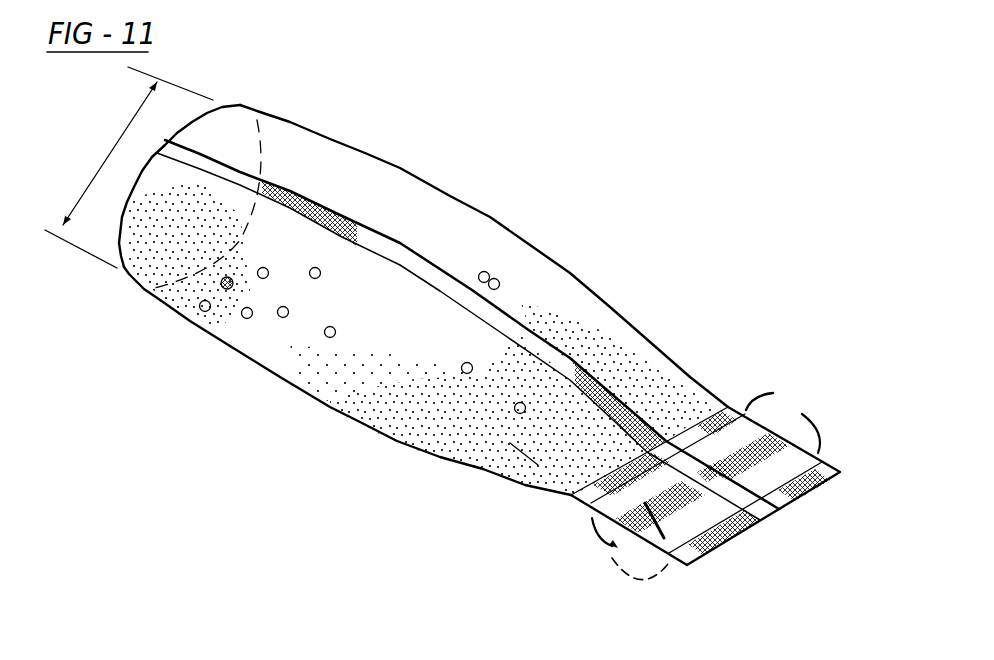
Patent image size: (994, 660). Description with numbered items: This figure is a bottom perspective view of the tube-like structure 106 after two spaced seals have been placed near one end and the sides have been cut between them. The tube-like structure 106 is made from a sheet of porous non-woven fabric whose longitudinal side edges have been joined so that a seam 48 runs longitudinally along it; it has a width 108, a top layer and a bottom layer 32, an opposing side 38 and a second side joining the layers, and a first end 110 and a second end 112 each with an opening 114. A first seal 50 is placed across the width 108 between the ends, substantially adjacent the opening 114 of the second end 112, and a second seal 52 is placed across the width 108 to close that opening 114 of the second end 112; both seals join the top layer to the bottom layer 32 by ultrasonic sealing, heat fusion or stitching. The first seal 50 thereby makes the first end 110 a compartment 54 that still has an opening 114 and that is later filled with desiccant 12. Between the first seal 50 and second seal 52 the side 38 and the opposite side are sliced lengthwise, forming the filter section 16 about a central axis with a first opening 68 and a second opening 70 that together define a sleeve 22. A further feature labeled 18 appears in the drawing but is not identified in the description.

The desiccant 12 is at (363, 372).
The filter section 16 is at (705, 522).
The fold direction 18 is at (567, 545).
The sleeve 22 is at (657, 590).
The bottom layer 32 is at (468, 330).
The side 38 is at (487, 489).
The seam 48 is at (319, 176).
The first seal 50 is at (658, 422).
The second seal 52 is at (763, 484).
The compartment 54 is at (420, 308).
The first opening 68 is at (773, 414).
The second opening 70 is at (641, 537).
The tube-like structure 106 is at (484, 256).
The width 108 is at (129, 167).
The first end 110 is at (345, 381).
The second end 112 is at (813, 374).
The opening 114 is at (179, 164).